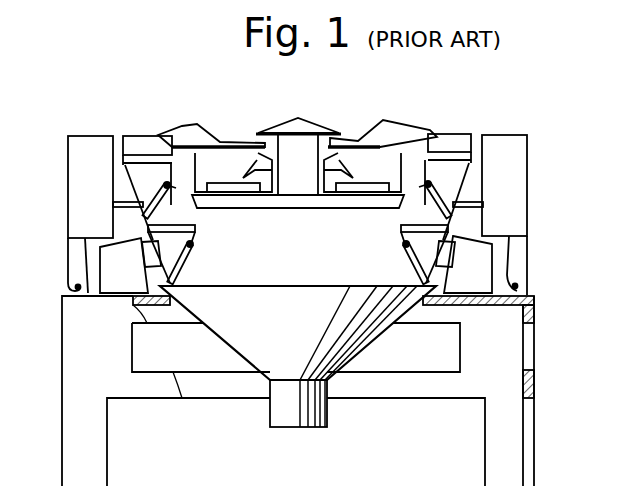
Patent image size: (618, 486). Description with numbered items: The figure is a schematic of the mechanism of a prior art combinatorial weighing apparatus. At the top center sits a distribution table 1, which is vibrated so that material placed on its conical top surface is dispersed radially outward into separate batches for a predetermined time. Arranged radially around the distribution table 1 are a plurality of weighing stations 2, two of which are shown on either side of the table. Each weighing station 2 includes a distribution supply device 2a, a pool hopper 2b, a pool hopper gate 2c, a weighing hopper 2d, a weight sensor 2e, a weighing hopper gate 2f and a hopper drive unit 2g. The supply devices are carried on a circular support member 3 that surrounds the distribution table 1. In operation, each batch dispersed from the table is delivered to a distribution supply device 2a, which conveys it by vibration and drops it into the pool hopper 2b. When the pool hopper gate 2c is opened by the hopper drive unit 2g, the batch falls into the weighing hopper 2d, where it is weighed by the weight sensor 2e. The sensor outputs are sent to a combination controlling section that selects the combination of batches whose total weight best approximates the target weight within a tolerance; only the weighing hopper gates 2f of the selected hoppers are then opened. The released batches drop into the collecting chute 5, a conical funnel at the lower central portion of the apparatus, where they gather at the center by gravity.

The distribution table 1 is at (320, 128).
The weighing station 2 is at (127, 129).
The distribution supply device 2a is at (189, 127).
The pool hopper 2b is at (125, 170).
The pool hopper gate 2c is at (168, 203).
The weighing hopper 2d is at (195, 232).
The weight sensor 2e is at (113, 272).
The weighing hopper gate 2f is at (188, 258).
The hopper drive unit 2g is at (70, 195).
The circular support member 3 is at (293, 200).
The collecting chute 5 is at (262, 357).